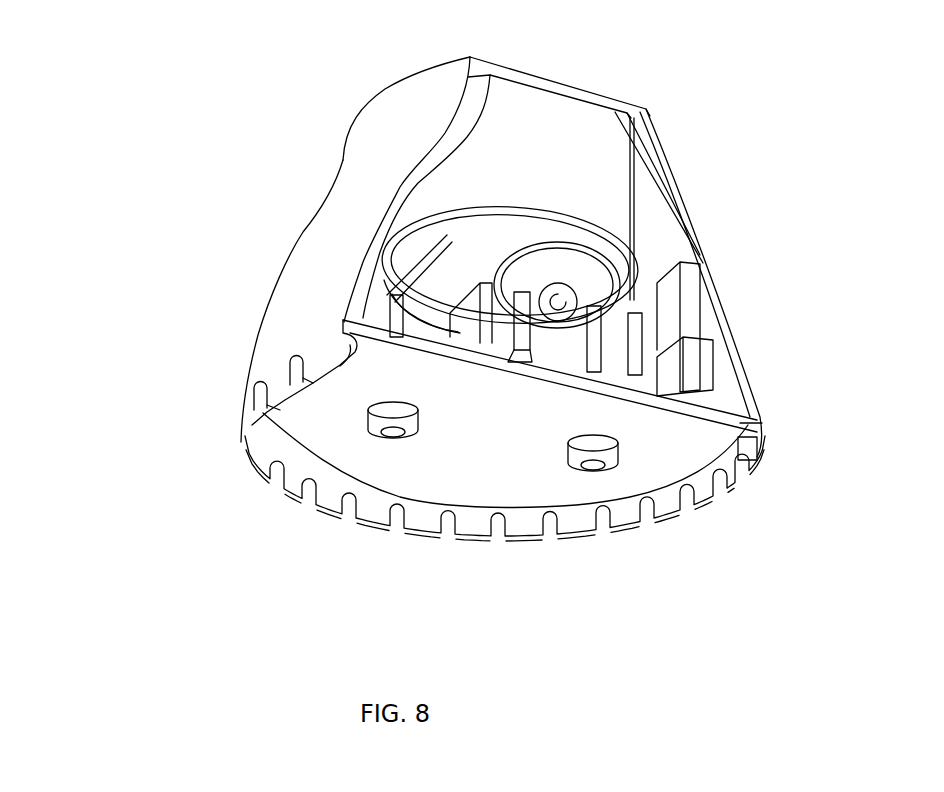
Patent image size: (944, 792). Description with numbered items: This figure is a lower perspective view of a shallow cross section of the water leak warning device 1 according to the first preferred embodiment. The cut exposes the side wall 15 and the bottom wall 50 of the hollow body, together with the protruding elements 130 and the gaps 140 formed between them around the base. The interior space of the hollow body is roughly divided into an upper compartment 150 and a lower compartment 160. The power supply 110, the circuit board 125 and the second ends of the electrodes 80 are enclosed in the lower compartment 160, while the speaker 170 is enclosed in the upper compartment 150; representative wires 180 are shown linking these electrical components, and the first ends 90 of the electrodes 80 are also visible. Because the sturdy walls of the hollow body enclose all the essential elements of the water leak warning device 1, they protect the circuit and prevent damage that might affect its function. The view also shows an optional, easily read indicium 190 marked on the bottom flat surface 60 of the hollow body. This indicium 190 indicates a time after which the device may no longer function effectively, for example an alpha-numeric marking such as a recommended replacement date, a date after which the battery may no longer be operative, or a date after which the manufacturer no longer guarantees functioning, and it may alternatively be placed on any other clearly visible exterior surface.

The water leak warning device 1 is at (292, 105).
The side wall 15 is at (360, 253).
The bottom wall 50 is at (643, 387).
The bottom flat surface 60 is at (340, 412).
The electrodes 80 is at (397, 443).
The first ends of the electrodes 90 is at (583, 477).
The power supply 110 is at (543, 337).
The circuit board 125 is at (657, 297).
The protruding elements 130 is at (273, 489).
The gaps 140 is at (600, 513).
The upper compartment 150 is at (513, 138).
The lower compartment 160 is at (373, 300).
The speaker 170 is at (513, 221).
The representative wires 180 is at (560, 302).
The indicium 190 is at (523, 392).